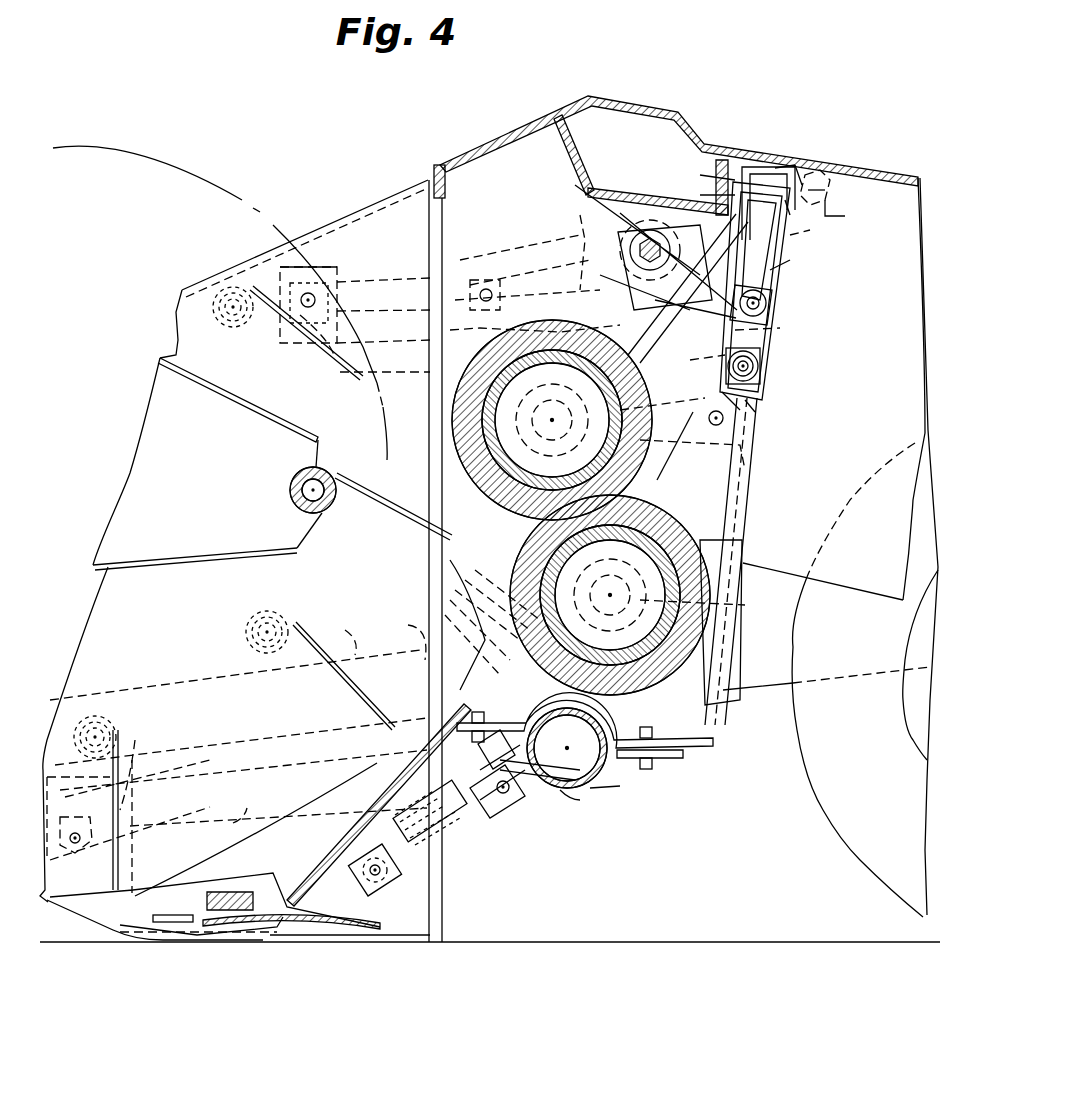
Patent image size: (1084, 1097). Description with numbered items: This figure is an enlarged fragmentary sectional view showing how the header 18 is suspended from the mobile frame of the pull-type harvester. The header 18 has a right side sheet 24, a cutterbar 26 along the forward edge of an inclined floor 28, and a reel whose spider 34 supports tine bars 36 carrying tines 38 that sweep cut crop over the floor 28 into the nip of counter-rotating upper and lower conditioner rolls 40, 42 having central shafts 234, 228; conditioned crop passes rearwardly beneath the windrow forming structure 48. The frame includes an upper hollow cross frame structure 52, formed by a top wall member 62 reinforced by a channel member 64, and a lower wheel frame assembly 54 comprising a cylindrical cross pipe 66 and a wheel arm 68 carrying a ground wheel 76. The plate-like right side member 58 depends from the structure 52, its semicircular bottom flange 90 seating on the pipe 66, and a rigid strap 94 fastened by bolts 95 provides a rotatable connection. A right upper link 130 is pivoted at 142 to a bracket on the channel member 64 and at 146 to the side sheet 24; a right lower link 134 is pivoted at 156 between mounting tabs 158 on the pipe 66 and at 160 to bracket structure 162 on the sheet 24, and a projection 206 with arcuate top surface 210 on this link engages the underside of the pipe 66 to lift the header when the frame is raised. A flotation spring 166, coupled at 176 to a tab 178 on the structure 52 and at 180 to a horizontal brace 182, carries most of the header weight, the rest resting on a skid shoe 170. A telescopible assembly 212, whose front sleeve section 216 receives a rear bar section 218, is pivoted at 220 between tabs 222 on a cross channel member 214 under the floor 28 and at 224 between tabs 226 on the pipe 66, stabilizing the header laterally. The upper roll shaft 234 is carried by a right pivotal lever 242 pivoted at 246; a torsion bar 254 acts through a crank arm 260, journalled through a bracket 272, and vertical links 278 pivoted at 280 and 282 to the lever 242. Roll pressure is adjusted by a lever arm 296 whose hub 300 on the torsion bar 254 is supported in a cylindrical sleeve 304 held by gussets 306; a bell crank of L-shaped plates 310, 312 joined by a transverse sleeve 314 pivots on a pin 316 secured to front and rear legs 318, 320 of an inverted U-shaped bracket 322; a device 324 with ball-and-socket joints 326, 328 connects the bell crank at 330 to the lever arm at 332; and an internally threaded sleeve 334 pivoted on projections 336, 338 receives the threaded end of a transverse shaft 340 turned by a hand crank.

The header 18 is at (410, 185).
The right side sheet 24 is at (332, 210).
The cutterbar 26 is at (205, 948).
The floor 28 is at (352, 838).
The spider 34 is at (215, 560).
The tine bars 36 is at (240, 330).
The tines 38 is at (348, 375).
The upper conditioner roll 40 is at (612, 335).
The lower conditioner roll 42 is at (662, 520).
The windrow forming structure 48 is at (886, 164).
The upper hollow transverse frame structure 52 is at (638, 107).
The lower wheel frame assembly 54 is at (596, 770).
The right side member 58 is at (528, 208).
The top wall member 62 is at (645, 118).
The channel member 64 is at (593, 195).
The cylindrical cross pipe 66 is at (600, 775).
The left wheel arm 68 is at (768, 760).
The ground wheel 76 is at (858, 866).
The bottom edge flange 90 is at (690, 760).
The right rigid strap 94 is at (660, 775).
The bolts 95 is at (480, 712).
The right upper link 130 is at (408, 280).
The right lower link 134 is at (230, 828).
The pivotal connection 142 is at (600, 290).
The pivotal connection 146 is at (332, 336).
The pivotal connection 156 is at (490, 760).
The mounting tabs 158 is at (490, 778).
The pivotal connection 160 is at (87, 826).
The right bracket structure 162 is at (140, 735).
The right flotation spring 166 is at (498, 580).
The skid shoe 170 is at (335, 942).
The coupling 176 is at (815, 165).
The tab 178 is at (848, 214).
The coupling 180 is at (400, 634).
The horizontal brace 182 is at (334, 631).
The projection 206 is at (580, 808).
The arcuate top surface 210 is at (585, 800).
The telescopible assembly 212 is at (467, 843).
The cross channel member 214 is at (425, 910).
The front sleeve section 216 is at (433, 850).
The rear bar section 218 is at (490, 815).
The pivotal connection 220 is at (375, 860).
The upstanding tabs 222 is at (425, 890).
The pivotal connection 224 is at (510, 795).
The forwardly projecting tabs 226 is at (520, 820).
The central shaft 228 is at (709, 609).
The central shaft 234 is at (735, 420).
The right pivotal lever 242 is at (750, 460).
The pivotal mounting 246 is at (730, 428).
The left torsion bar 254 is at (672, 262).
The right crank arm 260 is at (555, 250).
The right bracket 272 is at (585, 213).
The right pair of vertical links 278 is at (430, 348).
The pivotal connection 280 is at (498, 272).
The pivotal connection 282 is at (430, 374).
The left lever arm 296 is at (670, 298).
The hub 300 is at (650, 230).
The cylindrical sleeve 304 is at (700, 194).
The gussets 306 is at (600, 270).
The L-shaped plate 310 is at (760, 337).
The L-shaped plate 312 is at (786, 446).
The transverse sleeve 314 is at (745, 215).
The pin 316 is at (762, 155).
The front vertical leg 318 is at (701, 177).
The rear vertical leg 320 is at (815, 195).
The inverted U-shaped bracket 322 is at (755, 150).
The device 324 is at (780, 275).
The ball-and-socket joint assembly 326 is at (790, 232).
The ball-and-socket joint assembly 328 is at (770, 322).
The pivotal connection 330 is at (790, 248).
The pivotal connection 332 is at (770, 302).
The internally threaded sleeve 334 is at (765, 382).
The projection 336 is at (705, 359).
The projection 338 is at (765, 366).
The transversely extending shaft 340 is at (760, 398).